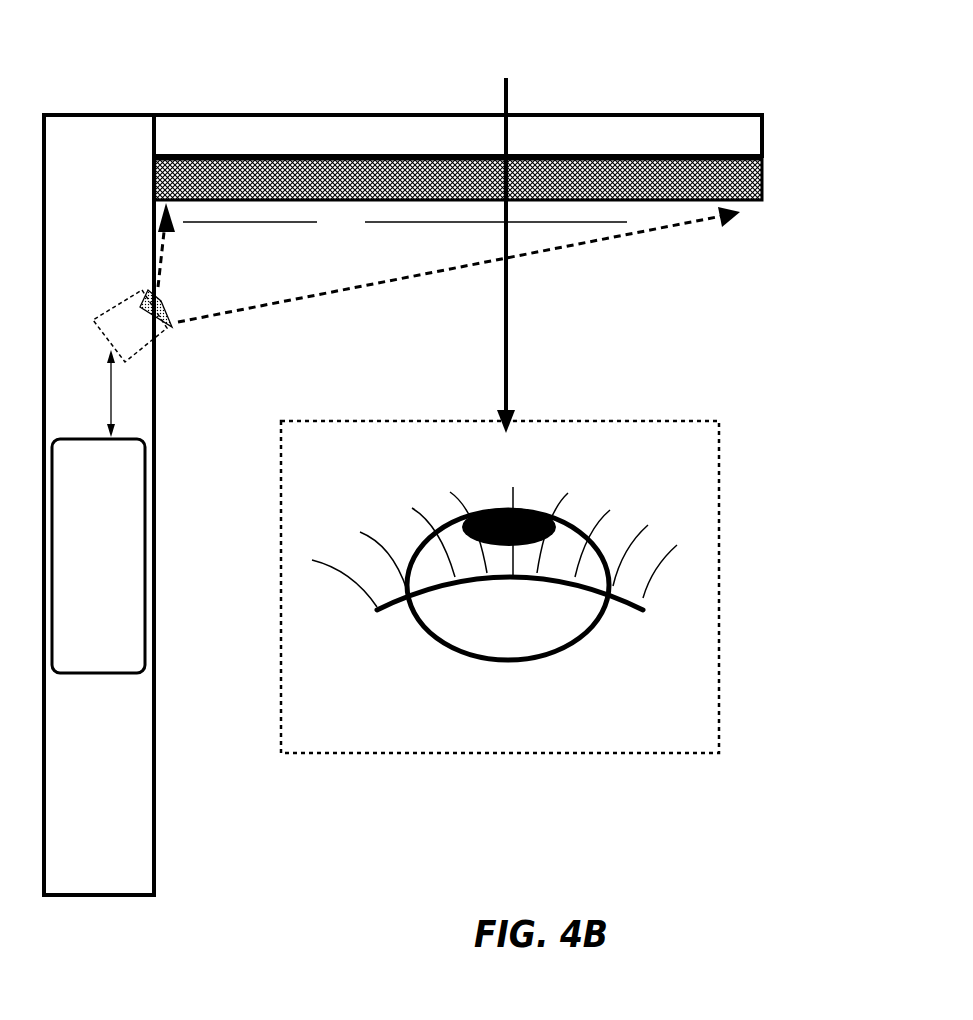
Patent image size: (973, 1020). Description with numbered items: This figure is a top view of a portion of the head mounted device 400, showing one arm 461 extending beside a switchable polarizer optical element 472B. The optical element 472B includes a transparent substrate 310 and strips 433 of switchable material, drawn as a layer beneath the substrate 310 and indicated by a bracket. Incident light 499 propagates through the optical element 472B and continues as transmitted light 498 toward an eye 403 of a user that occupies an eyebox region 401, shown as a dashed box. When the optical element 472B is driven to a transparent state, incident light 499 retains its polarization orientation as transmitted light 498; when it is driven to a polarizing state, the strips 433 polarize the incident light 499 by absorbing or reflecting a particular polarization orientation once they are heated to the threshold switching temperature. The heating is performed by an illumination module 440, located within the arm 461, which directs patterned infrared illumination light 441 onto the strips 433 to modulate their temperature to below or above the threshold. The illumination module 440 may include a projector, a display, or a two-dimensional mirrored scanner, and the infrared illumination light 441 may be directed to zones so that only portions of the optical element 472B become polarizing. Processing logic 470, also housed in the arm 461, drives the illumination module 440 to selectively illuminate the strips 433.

The head mounted device 400 is at (927, 48).
The transparent substrate 310 is at (345, 146).
The strips 433 is at (188, 190).
The optical element 472B is at (778, 117).
The incident light 499 is at (506, 124).
The transmitted light 498 is at (506, 332).
The patterned infrared illumination light 441 is at (405, 221).
The illumination module 440 is at (114, 333).
The processing logic 470 is at (84, 511).
The arm 461 is at (86, 851).
The eyebox region 401 is at (720, 717).
The eye 403 is at (596, 667).